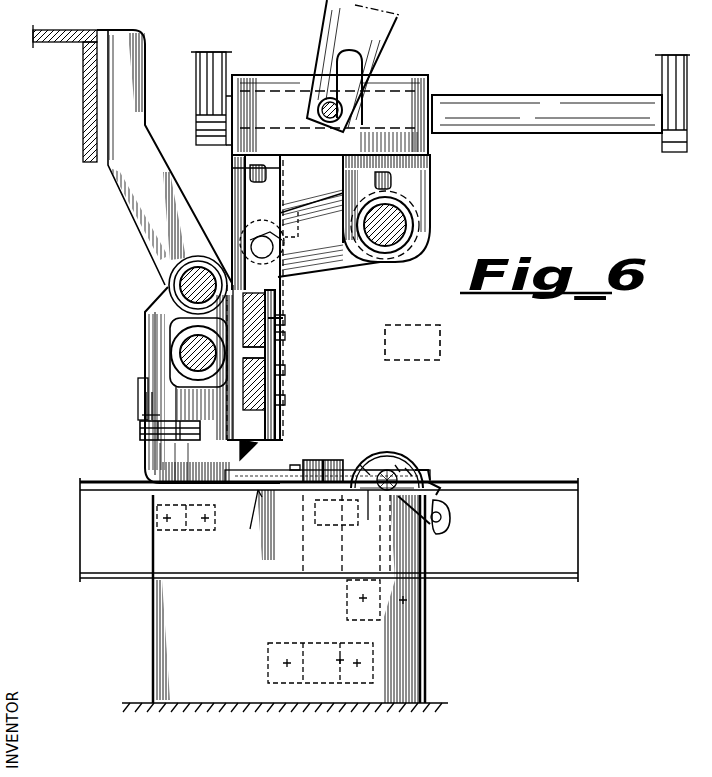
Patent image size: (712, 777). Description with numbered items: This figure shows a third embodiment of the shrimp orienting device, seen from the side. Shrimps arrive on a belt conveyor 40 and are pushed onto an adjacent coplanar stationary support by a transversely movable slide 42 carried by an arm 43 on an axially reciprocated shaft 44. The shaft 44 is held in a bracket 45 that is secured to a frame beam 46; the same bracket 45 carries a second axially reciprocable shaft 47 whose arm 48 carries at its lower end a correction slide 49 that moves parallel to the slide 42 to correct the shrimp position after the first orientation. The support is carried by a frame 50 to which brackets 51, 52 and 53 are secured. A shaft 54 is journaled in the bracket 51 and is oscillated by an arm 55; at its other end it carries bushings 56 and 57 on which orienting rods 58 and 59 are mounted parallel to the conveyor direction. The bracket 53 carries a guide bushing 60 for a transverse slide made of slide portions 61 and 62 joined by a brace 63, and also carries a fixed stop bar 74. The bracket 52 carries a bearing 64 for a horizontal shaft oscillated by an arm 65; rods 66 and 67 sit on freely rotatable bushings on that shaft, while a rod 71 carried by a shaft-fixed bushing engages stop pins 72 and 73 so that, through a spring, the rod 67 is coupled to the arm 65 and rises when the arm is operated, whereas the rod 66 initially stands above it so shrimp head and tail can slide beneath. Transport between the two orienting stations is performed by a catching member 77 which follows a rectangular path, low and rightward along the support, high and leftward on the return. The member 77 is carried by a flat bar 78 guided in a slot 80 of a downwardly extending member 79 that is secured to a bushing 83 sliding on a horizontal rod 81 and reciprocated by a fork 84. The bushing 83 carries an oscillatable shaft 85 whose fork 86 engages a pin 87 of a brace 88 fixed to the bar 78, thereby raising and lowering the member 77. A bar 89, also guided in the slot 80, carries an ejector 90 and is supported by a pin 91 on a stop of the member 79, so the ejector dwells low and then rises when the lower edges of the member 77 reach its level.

The belt conveyor 40 is at (523, 489).
The slide 42 is at (246, 508).
The arm 43 is at (226, 408).
The shaft 44 is at (177, 353).
The bracket 45 is at (128, 219).
The frame beam 46 is at (61, 40).
The shaft 47 is at (177, 285).
The arm 48 is at (158, 313).
The correction slide 49 is at (244, 518).
The frame 50 is at (392, 688).
The bracket 51 is at (157, 515).
The bracket 52 is at (425, 601).
The bracket 53 is at (395, 667).
The shaft 54 is at (140, 434).
The arm 55 is at (144, 400).
The bushing 56 is at (140, 418).
The bushing 57 is at (138, 383).
The rod 58 is at (268, 470).
The rod 59 is at (293, 465).
The guide bushing 60 is at (317, 460).
The slide portion 61 is at (368, 520).
The slide portion 62 is at (326, 465).
The brace 63 is at (340, 522).
The bearing 64 is at (420, 523).
The arm 65 is at (448, 521).
The rod 66 is at (422, 478).
The rod 67 is at (432, 486).
The rod 71 is at (387, 462).
The stop pin 72 is at (368, 468).
The stop pin 73 is at (396, 465).
The fixed stop bar 74 is at (406, 468).
The catching member 77 is at (160, 473).
The flat bar 78 is at (286, 386).
The member 79 is at (284, 290).
The slot 80 is at (256, 353).
The horizontal rod 81 is at (560, 118).
The bushing 83 is at (393, 103).
The fork 84 is at (333, 38).
The oscillatable shaft 85 is at (388, 225).
The fork 86 is at (330, 252).
The pin 87 is at (298, 212).
The brace 88 is at (284, 307).
The bar 89 is at (282, 335).
The ejector 90 is at (280, 414).
The pin 91 is at (286, 320).